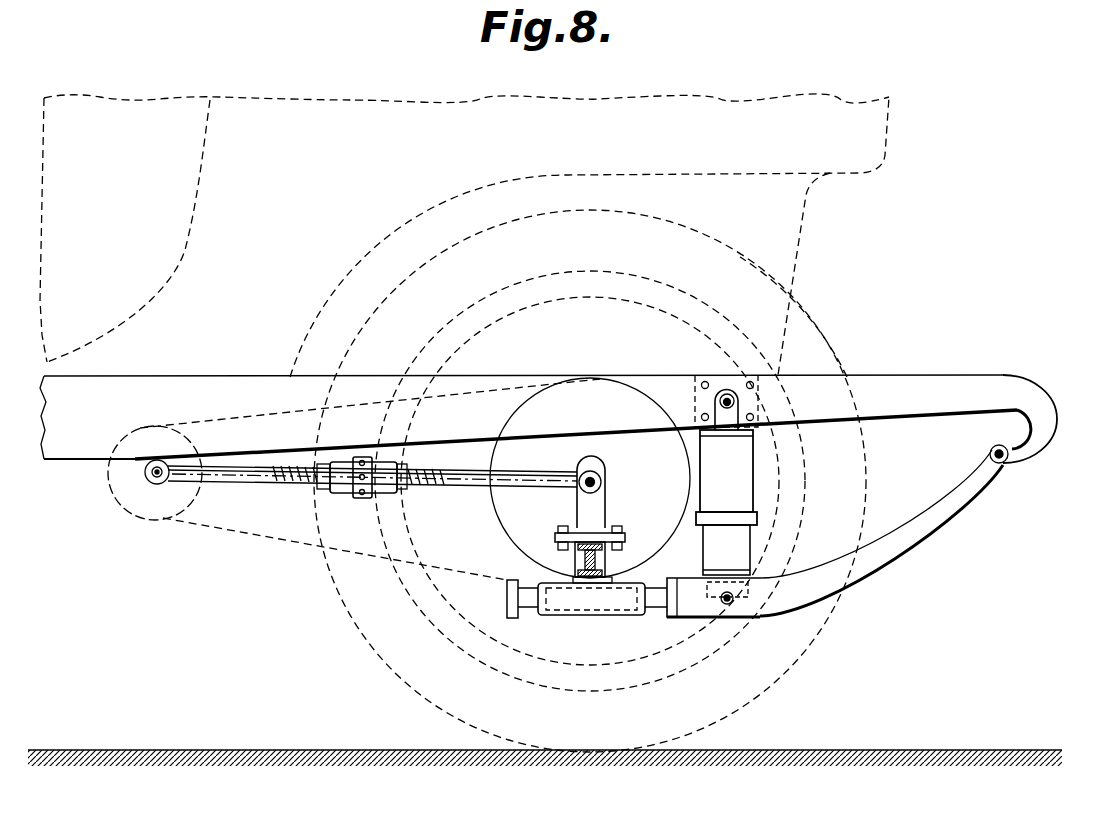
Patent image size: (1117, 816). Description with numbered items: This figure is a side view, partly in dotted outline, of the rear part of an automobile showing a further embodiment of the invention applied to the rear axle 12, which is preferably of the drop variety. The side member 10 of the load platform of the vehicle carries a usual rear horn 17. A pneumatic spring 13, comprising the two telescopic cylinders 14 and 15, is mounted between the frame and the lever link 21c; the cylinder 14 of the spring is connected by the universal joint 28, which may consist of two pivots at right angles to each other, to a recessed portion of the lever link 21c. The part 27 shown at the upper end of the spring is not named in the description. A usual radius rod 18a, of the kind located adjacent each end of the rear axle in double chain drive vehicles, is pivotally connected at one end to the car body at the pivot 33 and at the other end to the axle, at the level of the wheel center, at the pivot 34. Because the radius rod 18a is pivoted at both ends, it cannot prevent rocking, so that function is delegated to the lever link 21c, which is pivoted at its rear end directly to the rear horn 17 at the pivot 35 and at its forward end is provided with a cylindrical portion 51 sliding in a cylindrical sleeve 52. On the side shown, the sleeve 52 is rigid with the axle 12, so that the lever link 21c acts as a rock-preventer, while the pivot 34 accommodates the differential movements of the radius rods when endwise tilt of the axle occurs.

The side member 10 is at (632, 383).
The rear axle 12 is at (598, 560).
The pneumatic spring 13 is at (757, 517).
The telescopic cylinder 14 is at (726, 471).
The telescopic cylinder 15 is at (726, 550).
The rear horn 17 is at (1042, 408).
The radius rod 18a is at (275, 480).
The lever link 21c is at (883, 560).
The pivot bracket 27 is at (730, 397).
The universal joint 28 is at (729, 603).
The pivotal connection to car body 33 is at (150, 477).
The pivotal connection to axle 34 is at (603, 478).
The pivot 35 is at (1003, 465).
The cylindrical portion 51 is at (657, 605).
The cylindrical sleeve 52 is at (600, 615).